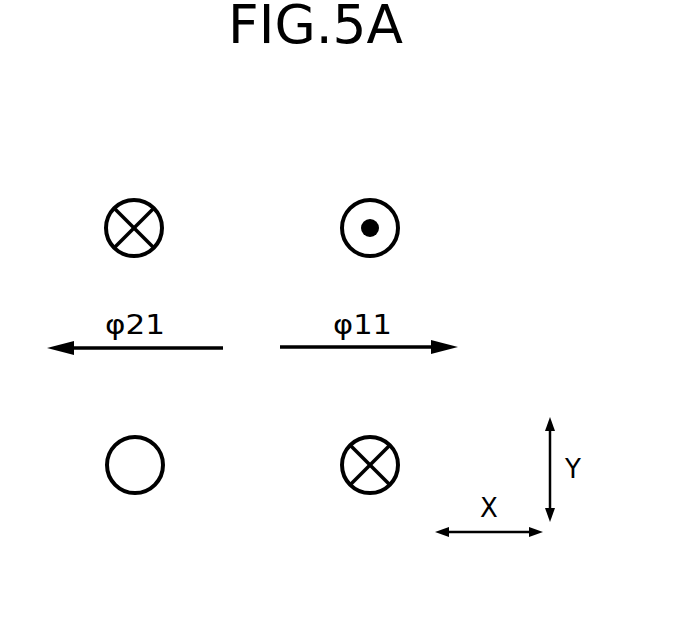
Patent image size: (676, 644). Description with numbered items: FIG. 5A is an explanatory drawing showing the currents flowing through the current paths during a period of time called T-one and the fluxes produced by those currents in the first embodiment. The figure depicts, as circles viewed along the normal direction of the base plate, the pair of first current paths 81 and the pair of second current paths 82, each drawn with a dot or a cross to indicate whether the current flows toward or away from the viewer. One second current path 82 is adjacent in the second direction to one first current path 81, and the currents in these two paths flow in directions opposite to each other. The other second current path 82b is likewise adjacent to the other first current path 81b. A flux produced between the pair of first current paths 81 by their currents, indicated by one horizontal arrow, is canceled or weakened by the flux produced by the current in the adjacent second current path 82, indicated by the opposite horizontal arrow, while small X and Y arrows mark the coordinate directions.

The second current path 82 is at (135, 212).
The first current path 81 is at (377, 212).
The other second current path 82b is at (130, 470).
The other first current path 81b is at (372, 480).